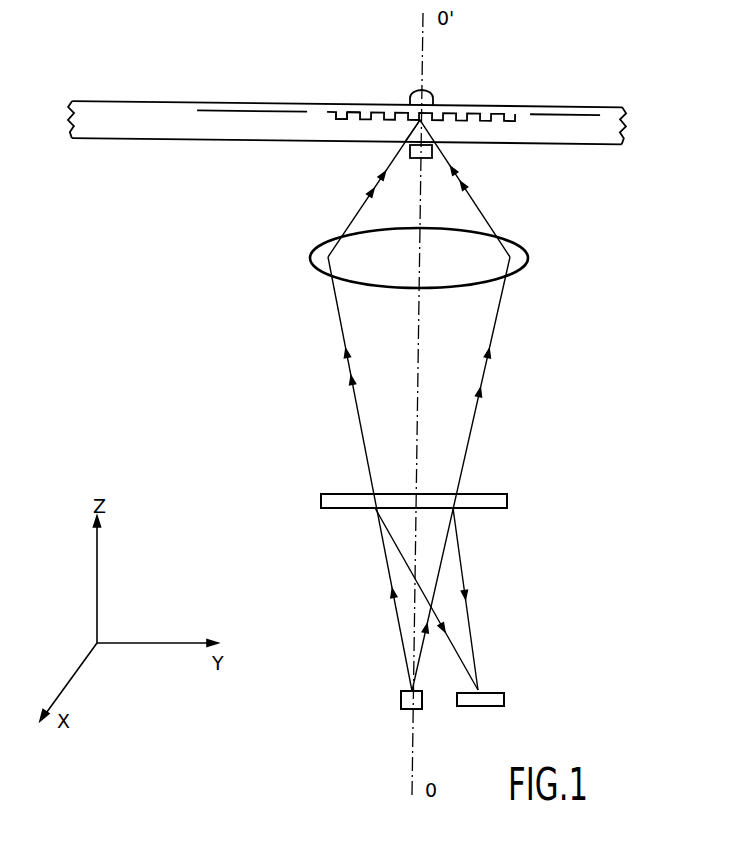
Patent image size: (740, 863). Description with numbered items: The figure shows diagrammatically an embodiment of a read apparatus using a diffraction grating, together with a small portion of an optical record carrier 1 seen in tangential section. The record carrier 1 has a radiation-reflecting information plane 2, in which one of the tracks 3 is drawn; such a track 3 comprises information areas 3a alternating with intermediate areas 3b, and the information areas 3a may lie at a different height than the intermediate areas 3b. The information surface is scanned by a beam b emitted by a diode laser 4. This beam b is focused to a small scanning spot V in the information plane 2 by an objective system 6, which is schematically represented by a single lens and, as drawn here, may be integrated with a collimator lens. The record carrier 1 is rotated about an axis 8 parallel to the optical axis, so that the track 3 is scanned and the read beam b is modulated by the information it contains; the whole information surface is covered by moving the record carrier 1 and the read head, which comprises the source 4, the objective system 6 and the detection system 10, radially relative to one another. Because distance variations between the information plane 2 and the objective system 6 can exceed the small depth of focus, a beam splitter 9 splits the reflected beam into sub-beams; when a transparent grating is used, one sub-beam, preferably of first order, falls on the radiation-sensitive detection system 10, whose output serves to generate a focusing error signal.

The optical record carrier 1 is at (572, 93).
The radiation-reflecting information plane 2 is at (596, 114).
The track 3 is at (455, 103).
The information areas 3a is at (342, 112).
The intermediate areas 3b is at (354, 112).
The diode laser 4 is at (401, 699).
The objective system 6 is at (521, 262).
The axis 8 is at (431, 98).
The beam splitter 9 is at (507, 502).
The radiation-sensitive detection system 10 is at (497, 698).
The scanning spot V is at (415, 113).
The beam b is at (420, 609).